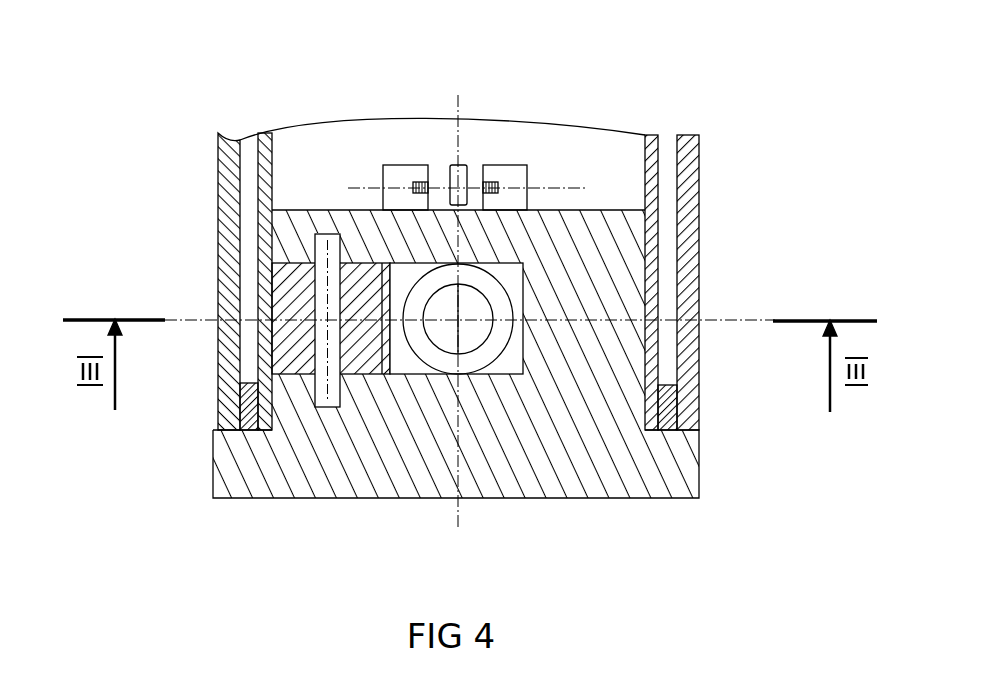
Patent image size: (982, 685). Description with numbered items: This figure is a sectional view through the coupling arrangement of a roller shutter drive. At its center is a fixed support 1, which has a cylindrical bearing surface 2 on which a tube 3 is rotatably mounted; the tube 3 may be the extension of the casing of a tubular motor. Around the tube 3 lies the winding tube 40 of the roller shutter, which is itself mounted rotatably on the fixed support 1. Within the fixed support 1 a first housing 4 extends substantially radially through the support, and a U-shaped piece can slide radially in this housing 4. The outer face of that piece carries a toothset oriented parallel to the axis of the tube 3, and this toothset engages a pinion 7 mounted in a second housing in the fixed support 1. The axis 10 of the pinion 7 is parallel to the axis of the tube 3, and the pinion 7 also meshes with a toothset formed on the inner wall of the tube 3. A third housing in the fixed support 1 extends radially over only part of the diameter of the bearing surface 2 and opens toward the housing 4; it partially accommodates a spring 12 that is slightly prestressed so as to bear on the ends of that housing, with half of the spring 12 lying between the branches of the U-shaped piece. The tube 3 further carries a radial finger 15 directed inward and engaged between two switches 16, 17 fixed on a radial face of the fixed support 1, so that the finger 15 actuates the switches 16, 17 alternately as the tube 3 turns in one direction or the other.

The fixed support 1 is at (570, 433).
The cylindrical bearing surface 2 is at (645, 330).
The tube 3 is at (655, 253).
The first housing 4 is at (402, 363).
The pinion 7 is at (291, 330).
The axis 10 is at (240, 384).
The spring 12 is at (438, 357).
The radial finger 15 is at (461, 174).
The switch 16 is at (396, 174).
The switch 17 is at (516, 174).
The winding tube 40 is at (688, 388).